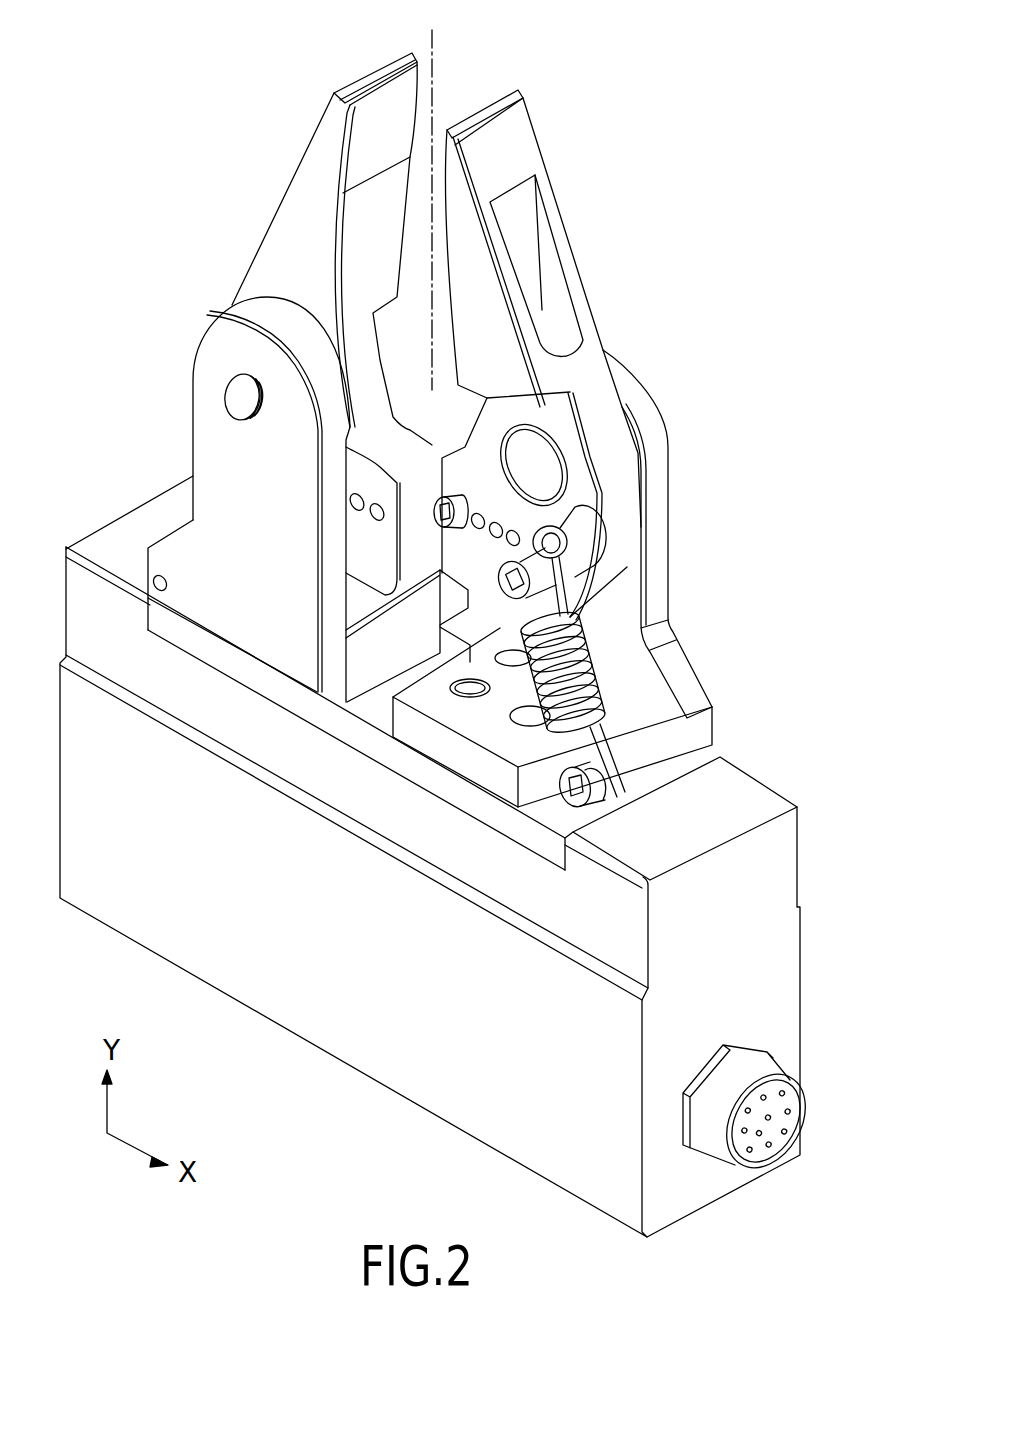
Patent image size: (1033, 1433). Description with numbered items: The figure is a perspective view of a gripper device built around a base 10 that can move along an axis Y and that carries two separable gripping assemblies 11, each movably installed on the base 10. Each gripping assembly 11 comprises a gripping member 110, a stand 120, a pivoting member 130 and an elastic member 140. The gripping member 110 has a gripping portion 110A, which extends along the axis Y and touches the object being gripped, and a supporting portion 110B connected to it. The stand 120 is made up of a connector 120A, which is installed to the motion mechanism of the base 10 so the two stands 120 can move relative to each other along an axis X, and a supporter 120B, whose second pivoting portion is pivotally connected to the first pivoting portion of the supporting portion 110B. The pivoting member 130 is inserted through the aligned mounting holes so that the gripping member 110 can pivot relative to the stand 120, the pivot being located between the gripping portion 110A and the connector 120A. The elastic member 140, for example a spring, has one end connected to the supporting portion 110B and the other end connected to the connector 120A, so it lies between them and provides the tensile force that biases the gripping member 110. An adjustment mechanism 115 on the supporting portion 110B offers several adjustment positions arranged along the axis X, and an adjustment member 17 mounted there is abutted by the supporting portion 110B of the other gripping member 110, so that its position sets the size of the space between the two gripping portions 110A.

The base 10 is at (777, 878).
The gripping assembly 11 is at (208, 253).
The adjustment member 17 is at (440, 512).
The gripping member 110 is at (331, 377).
The gripping portion 110A is at (327, 157).
The supporting portion 110B is at (622, 542).
The adjustment mechanism 115 is at (473, 527).
The stand 120 is at (218, 455).
The connector 120A is at (694, 739).
The supporter 120B is at (658, 506).
The pivoting member 130 is at (235, 398).
The elastic member 140 is at (603, 710).